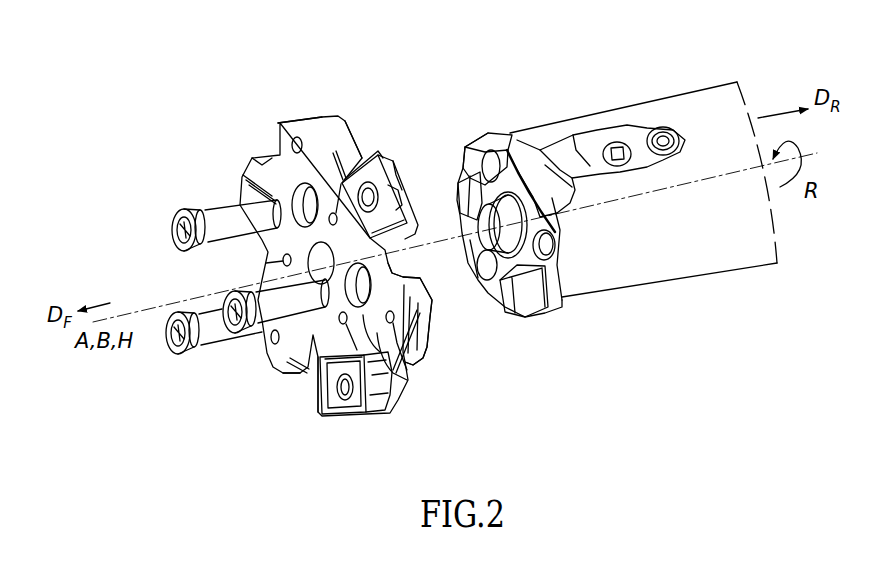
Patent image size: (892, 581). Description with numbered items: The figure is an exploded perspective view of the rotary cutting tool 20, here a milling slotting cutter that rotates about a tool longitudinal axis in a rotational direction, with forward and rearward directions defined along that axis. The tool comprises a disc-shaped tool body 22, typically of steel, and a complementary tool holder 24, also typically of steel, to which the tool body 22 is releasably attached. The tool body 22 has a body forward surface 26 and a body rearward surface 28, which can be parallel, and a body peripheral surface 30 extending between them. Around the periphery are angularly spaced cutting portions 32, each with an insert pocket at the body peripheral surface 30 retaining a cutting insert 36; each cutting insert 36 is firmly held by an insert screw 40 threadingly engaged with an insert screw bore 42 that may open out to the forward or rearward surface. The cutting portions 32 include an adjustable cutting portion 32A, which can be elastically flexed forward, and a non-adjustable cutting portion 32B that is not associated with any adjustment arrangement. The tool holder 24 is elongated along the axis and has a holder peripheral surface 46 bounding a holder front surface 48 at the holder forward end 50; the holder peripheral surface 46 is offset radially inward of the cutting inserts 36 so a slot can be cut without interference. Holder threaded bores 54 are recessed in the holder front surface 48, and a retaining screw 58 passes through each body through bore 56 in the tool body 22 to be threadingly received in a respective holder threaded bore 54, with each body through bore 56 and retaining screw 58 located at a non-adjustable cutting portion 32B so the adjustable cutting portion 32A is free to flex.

The rotary cutting tool 20 is at (181, 99).
The tool body 22 is at (284, 97).
The tool holder 24 is at (645, 88).
The body forward surface 26 is at (281, 157).
The body rearward surface 28 is at (367, 134).
The body peripheral surface 30 is at (390, 173).
The cutting portions 32 is at (318, 260).
The adjustable cutting portion 32A is at (418, 187).
The non-adjustable cutting portion 32B is at (313, 100).
The cutting insert 36 is at (357, 420).
The insert screw 40 is at (372, 412).
The insert screw bore 42 is at (430, 350).
The holder peripheral surface 46 is at (713, 104).
The holder front surface 48 is at (553, 230).
The holder forward end 50 is at (532, 324).
The holder threaded bore 54 is at (486, 151).
The body through bore 56 is at (264, 260).
The retaining screw 58 is at (190, 207).